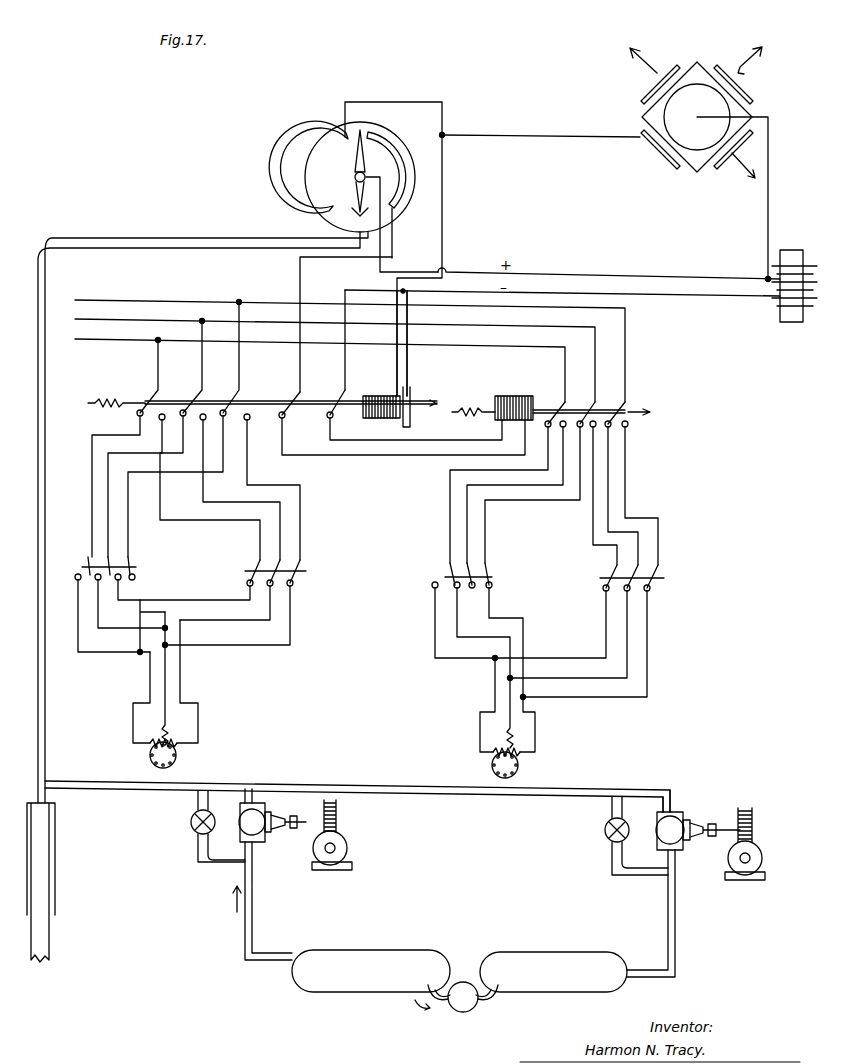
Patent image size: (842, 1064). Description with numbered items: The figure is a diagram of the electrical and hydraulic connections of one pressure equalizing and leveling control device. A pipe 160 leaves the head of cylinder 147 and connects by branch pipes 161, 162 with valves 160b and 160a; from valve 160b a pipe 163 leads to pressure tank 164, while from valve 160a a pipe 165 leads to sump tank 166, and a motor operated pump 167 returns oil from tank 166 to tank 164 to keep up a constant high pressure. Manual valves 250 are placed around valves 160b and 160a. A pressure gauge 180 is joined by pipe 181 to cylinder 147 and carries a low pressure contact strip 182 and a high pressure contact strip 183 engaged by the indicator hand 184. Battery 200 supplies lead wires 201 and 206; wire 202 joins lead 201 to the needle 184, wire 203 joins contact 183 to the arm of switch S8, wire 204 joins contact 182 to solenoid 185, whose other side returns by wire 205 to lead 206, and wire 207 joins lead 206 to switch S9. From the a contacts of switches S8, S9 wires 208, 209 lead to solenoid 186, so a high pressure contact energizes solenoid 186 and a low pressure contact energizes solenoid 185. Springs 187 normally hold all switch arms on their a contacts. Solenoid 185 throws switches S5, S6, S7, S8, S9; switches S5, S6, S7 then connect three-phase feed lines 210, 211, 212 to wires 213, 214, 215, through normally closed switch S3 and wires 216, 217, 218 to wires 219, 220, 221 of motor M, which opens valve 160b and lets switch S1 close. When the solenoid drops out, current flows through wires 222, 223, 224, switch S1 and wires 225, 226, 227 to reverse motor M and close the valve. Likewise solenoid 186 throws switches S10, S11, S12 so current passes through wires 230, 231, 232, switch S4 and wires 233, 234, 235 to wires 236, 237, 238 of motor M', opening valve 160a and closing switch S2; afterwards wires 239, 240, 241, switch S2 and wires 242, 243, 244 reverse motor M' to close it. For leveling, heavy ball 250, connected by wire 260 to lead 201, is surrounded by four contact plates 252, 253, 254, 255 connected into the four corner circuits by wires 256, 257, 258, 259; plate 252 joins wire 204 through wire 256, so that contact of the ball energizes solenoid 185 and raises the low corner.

The cylinder 147 is at (52, 886).
The pipe 160 is at (344, 780).
The valve 160a is at (676, 812).
The valve 160b is at (258, 845).
The branch pipe 161 is at (248, 784).
The branch pipe 162 is at (648, 790).
The pipe 163 is at (245, 932).
The pressure tank 164 is at (356, 980).
The pipe 165 is at (676, 934).
The sump tank 166 is at (562, 956).
The motor operated pump 167 is at (460, 1010).
The pressure gauge 180 is at (305, 180).
The pipe 181 is at (208, 238).
The low pressure contact strip 182 is at (330, 147).
The high pressure contact strip 183 is at (400, 166).
The indicator hand 184 is at (366, 150).
The solenoid 185 is at (402, 401).
The solenoid 186 is at (511, 396).
The spring 187 is at (97, 400).
The battery 200 is at (790, 250).
The lead wire 201 is at (566, 275).
The wire 202 is at (385, 247).
The wire 203 is at (300, 280).
The wire 204 is at (378, 102).
The wire 205 is at (409, 366).
The lead wire 206 is at (551, 294).
The wire 207 is at (345, 359).
The wire 208 is at (390, 458).
The wire 209 is at (402, 427).
The feed line 210 is at (104, 340).
The feed line 211 is at (121, 319).
The feed line 212 is at (150, 297).
The wire 213 is at (233, 522).
The wire 214 is at (280, 490).
The wire 215 is at (300, 485).
The wire 216 is at (224, 600).
The wire 217 is at (238, 618).
The wire 218 is at (232, 638).
The wire 219 is at (150, 678).
The wire 220 is at (166, 690).
The wire 221 is at (182, 668).
The wire 222 is at (92, 486).
The wire 223 is at (108, 505).
The wire 224 is at (152, 550).
The wire 225 is at (78, 605).
The wire 226 is at (118, 606).
The wire 227 is at (124, 604).
The wire 230 is at (593, 520).
The wire 231 is at (608, 515).
The wire 232 is at (632, 516).
The wire 233 is at (600, 622).
The wire 234 is at (625, 642).
The wire 235 is at (648, 640).
The wire 236 is at (494, 700).
The wire 237 is at (506, 732).
The wire 238 is at (536, 714).
The wire 239 is at (450, 520).
The wire 240 is at (467, 538).
The wire 241 is at (485, 548).
The wire 242 is at (456, 632).
The wire 243 is at (475, 640).
The wire 244 is at (507, 618).
The ball 250 is at (697, 117).
The contact plate 252 is at (660, 160).
The contact plate 253 is at (715, 168).
The contact plate 254 is at (748, 100).
The contact plate 255 is at (658, 70).
The wire 256 is at (513, 137).
The wire 257 is at (747, 159).
The wire 258 is at (748, 50).
The wire 259 is at (629, 71).
The wire 260 is at (770, 158).
The motor M is at (137, 741).
The motor M' is at (469, 757).
The switch S1 is at (137, 572).
The switch S2 is at (496, 568).
The switch S3 is at (300, 555).
The switch S4 is at (659, 574).
The switch S5 is at (155, 398).
The switch S6 is at (196, 398).
The switch S7 is at (236, 398).
The switch S8 is at (296, 398).
The switch S9 is at (341, 398).
The switch S10 is at (560, 402).
The switch S11 is at (590, 402).
The switch S12 is at (628, 402).